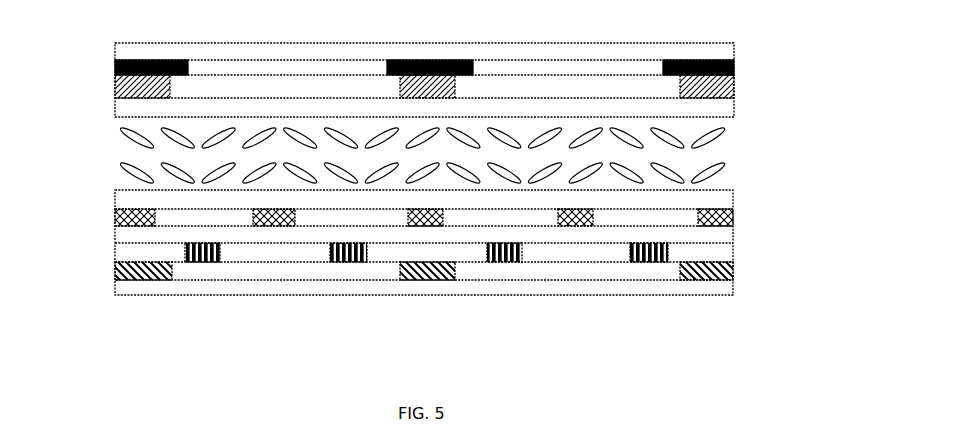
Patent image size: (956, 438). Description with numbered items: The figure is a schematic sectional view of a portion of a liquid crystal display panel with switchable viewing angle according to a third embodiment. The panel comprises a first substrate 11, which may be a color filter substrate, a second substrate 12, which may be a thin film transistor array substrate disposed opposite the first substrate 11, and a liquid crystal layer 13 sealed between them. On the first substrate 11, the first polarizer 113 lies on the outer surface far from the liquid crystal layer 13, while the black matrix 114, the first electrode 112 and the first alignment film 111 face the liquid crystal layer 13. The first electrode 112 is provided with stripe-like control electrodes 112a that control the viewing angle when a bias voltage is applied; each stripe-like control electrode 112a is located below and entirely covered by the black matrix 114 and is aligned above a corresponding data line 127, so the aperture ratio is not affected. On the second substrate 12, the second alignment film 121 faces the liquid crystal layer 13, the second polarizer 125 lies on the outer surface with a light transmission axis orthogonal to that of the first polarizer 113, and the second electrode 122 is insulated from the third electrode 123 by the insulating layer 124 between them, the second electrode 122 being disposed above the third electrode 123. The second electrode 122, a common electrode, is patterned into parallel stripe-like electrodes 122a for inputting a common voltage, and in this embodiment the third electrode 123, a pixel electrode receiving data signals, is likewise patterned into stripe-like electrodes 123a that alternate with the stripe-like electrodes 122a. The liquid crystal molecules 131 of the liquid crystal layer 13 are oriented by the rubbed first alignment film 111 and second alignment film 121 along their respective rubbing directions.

The first substrate 11 is at (105, 43).
The first alignment film 111 is at (735, 107).
The first electrode 112 is at (738, 85).
The stripe-like control electrode 112a is at (450, 60).
The first polarizer 113 is at (728, 52).
The black matrix 114 is at (735, 66).
The second substrate 12 is at (105, 184).
The second alignment film 121 is at (733, 190).
The second electrode 122 is at (735, 217).
The stripe-like electrode 122a is at (275, 226).
The third electrode 123 is at (647, 261).
The stripe-like electrode 123a is at (507, 262).
The insulating layer 124 is at (735, 237).
The second polarizer 125 is at (735, 287).
The data line 127 is at (137, 280).
The liquid crystal layer 13 is at (436, 154).
The liquid crystal molecules 131 is at (720, 133).